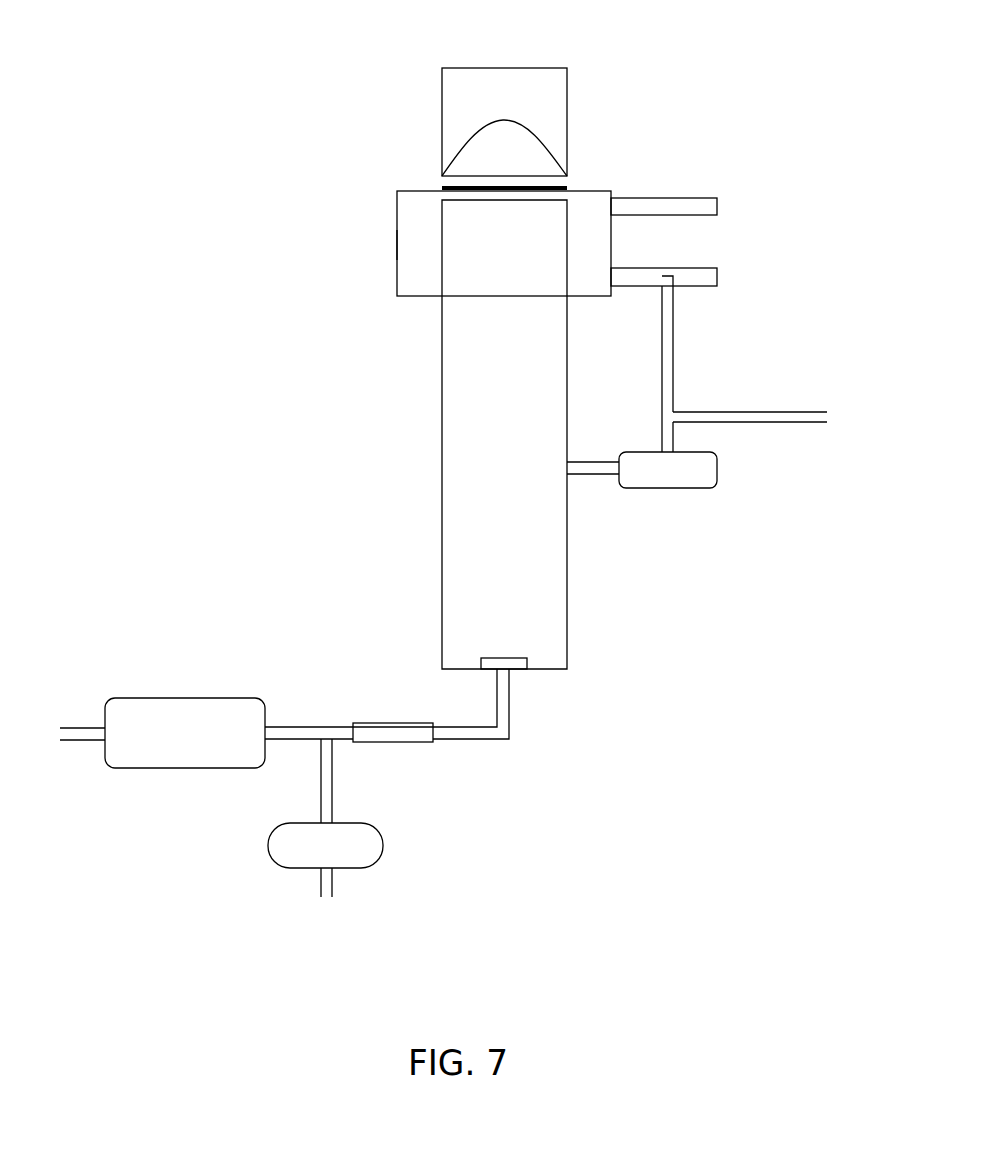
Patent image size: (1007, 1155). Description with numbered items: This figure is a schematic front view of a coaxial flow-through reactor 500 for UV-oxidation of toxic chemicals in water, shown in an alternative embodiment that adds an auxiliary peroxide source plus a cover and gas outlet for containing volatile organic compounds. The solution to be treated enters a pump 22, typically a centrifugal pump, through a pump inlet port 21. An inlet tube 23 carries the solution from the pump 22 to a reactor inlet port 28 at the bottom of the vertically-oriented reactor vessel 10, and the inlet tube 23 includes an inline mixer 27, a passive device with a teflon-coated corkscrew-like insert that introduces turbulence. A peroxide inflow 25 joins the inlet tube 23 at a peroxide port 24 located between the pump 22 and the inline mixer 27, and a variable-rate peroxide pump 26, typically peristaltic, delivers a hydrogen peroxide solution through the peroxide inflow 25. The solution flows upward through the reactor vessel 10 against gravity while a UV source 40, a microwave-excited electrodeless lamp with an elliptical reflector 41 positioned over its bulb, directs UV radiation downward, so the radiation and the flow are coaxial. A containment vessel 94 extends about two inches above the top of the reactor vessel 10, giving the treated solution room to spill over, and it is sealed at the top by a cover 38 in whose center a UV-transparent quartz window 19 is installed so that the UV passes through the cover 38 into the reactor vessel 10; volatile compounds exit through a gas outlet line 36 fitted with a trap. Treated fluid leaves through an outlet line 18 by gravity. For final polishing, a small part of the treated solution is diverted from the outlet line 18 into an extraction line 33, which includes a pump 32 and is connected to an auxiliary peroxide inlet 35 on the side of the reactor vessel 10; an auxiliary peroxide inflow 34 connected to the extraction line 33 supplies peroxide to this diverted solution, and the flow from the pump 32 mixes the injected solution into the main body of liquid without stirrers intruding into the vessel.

The coaxial flow-through reactor 500 is at (640, 47).
The UV source 40 is at (517, 103).
The reflector 41 is at (544, 142).
The window 19 is at (565, 180).
The cover 38 is at (418, 190).
The containment vessel 94 is at (397, 243).
The reactor vessel 10 is at (517, 447).
The gas outlet line 36 is at (682, 198).
The outlet line 18 is at (702, 268).
The extraction line 33 is at (674, 340).
The auxiliary peroxide inflow 34 is at (793, 412).
The pump 32 is at (718, 470).
The auxiliary peroxide inlet 35 is at (567, 462).
The reactor inlet port 28 is at (512, 672).
The inlet tube 23 is at (296, 727).
The inline mixer 27 is at (419, 743).
The pump 22 is at (146, 768).
The pump inlet port 21 is at (104, 728).
The peroxide port 24 is at (340, 741).
The peroxide inflow 25 is at (320, 776).
The peroxide pump 26 is at (383, 846).